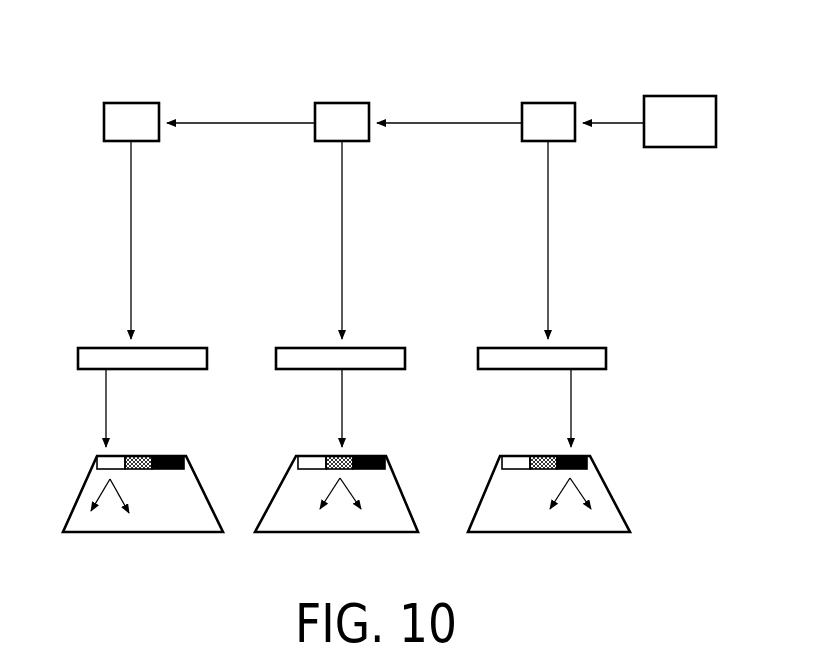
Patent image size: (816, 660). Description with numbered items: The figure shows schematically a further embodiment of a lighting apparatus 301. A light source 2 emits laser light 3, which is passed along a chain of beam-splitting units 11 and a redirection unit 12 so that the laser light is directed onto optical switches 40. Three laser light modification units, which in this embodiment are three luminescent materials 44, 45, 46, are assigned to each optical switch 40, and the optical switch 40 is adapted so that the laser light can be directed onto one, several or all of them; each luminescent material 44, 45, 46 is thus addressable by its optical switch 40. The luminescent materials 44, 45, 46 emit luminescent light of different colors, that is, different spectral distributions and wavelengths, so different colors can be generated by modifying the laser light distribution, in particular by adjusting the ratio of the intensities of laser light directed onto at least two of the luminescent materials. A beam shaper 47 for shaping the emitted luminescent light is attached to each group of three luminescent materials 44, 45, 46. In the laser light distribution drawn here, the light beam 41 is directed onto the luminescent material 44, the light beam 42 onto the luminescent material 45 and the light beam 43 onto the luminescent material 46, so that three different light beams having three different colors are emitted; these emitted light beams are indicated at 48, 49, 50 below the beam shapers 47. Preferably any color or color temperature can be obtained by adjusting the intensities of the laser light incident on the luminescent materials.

The lighting apparatus 301 is at (446, 71).
The light source 2 is at (680, 96).
The laser light 3 is at (611, 125).
The beam-splitting unit 11 is at (548, 103).
The redirection unit 12 is at (131, 103).
The optical switch 40 is at (102, 348).
The light beam 41 is at (106, 395).
The light beam 42 is at (342, 402).
The light beam 43 is at (571, 407).
The luminescent material 44 is at (97, 462).
The luminescent material 45 is at (138, 456).
The luminescent material 46 is at (170, 456).
The beam shaper 47 is at (205, 493).
The emitted light 48 is at (111, 520).
The emitted light 49 is at (346, 520).
The emitted light 50 is at (572, 520).